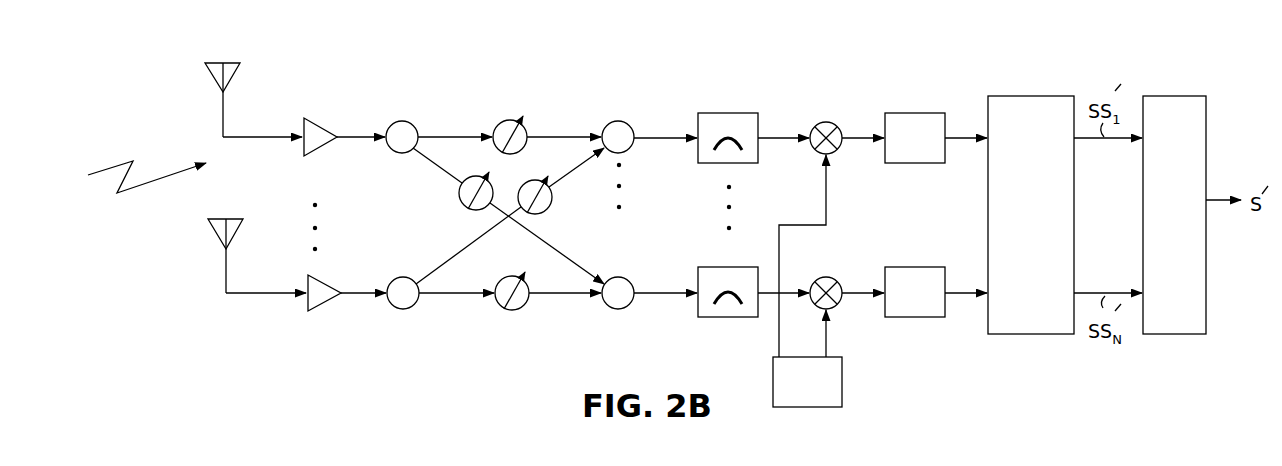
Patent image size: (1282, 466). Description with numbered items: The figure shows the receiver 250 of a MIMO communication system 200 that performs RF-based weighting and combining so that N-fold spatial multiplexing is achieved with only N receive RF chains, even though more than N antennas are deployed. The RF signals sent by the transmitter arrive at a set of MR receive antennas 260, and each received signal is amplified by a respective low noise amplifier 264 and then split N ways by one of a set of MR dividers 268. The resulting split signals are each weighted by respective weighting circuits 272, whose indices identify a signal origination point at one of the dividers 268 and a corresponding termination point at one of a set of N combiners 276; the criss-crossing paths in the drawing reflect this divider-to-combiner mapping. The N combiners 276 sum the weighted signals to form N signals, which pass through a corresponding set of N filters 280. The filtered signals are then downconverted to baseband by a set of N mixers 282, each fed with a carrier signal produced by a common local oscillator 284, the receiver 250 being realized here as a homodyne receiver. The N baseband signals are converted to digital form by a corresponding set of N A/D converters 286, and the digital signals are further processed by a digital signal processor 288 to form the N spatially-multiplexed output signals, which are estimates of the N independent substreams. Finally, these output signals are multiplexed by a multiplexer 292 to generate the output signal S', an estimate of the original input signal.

The MIMO communication system 200 is at (539, 215).
The receiver 250 is at (702, 56).
The receive antennas 260 is at (227, 63).
The low noise amplifier 264 is at (326, 147).
The dividers 268 is at (416, 128).
The weighting circuits 272 is at (529, 128).
The combiners 276 is at (632, 128).
The filters 280 is at (760, 121).
The mixers 282 is at (838, 127).
The local oscillator 284 is at (845, 384).
The A/D converters 286 is at (914, 164).
The digital signal processor 288 is at (1065, 215).
The multiplexer 292 is at (1192, 215).